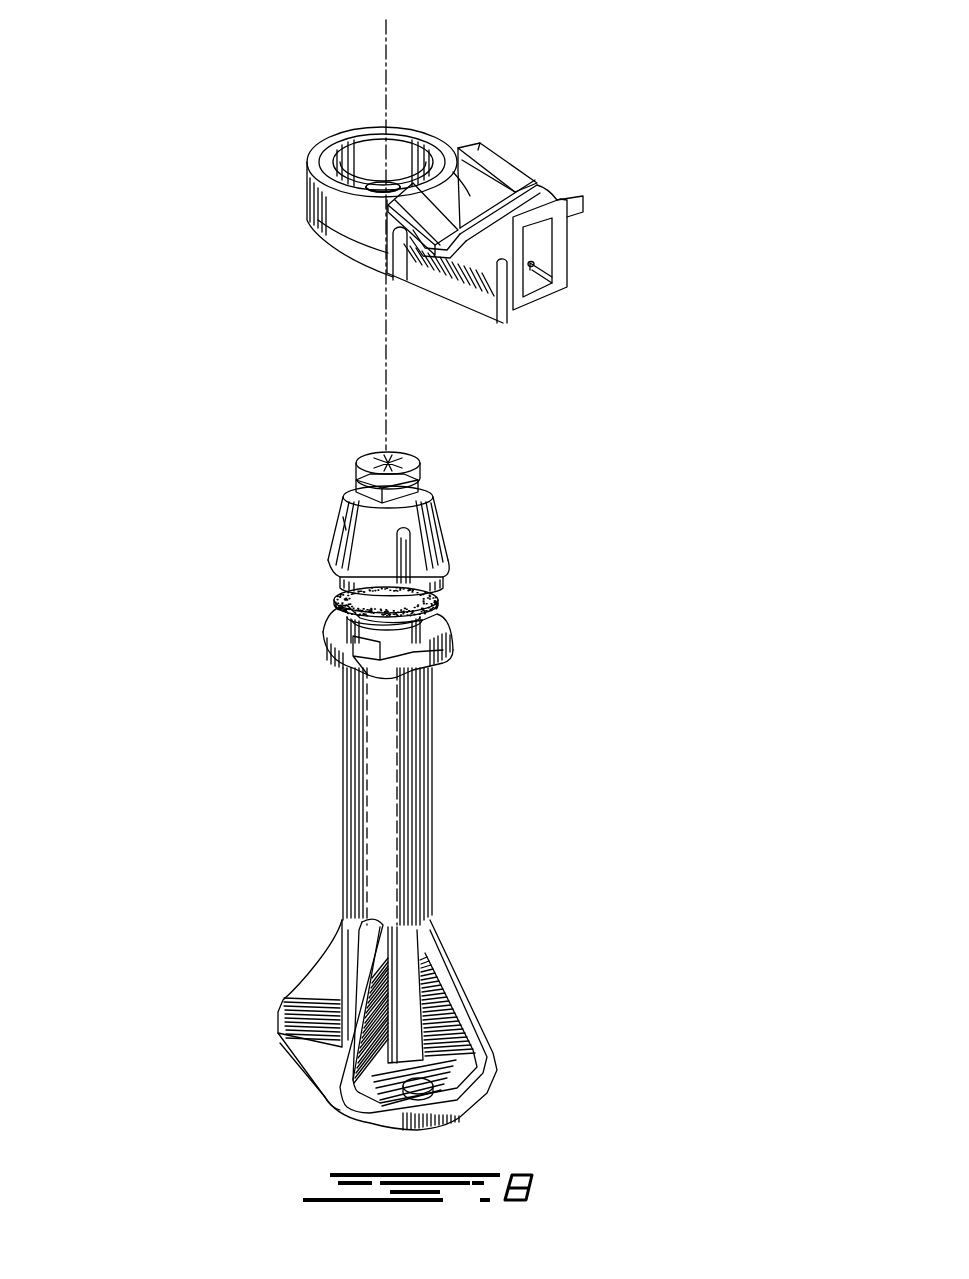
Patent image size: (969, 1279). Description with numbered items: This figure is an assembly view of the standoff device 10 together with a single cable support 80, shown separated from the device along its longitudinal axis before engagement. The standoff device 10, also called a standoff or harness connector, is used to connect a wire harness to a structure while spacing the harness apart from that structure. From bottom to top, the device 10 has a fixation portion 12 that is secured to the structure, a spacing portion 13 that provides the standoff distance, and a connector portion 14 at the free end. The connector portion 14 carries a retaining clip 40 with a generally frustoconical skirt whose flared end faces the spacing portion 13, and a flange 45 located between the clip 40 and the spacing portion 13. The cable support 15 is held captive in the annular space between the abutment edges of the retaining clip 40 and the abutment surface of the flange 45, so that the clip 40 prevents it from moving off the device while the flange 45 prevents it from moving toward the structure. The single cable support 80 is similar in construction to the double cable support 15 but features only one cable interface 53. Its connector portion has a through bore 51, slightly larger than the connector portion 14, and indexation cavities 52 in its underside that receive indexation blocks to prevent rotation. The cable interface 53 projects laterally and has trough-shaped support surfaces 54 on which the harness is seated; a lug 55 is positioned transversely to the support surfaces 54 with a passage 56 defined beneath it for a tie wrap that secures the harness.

The standoff device 10 is at (206, 727).
The fixation portion 12 is at (290, 965).
The spacing portion 13 is at (330, 775).
The connector portion 14 is at (300, 563).
The cable support 15 is at (490, 127).
The retaining clip 40 is at (440, 525).
The flange 45 is at (453, 652).
The through bore 51 is at (402, 157).
The indexation cavities 52 is at (380, 184).
The cable interface 53 is at (537, 177).
The support surfaces 54 is at (487, 163).
The lug 55 is at (583, 203).
The passage 56 is at (537, 247).
The single cable support 80 is at (297, 171).